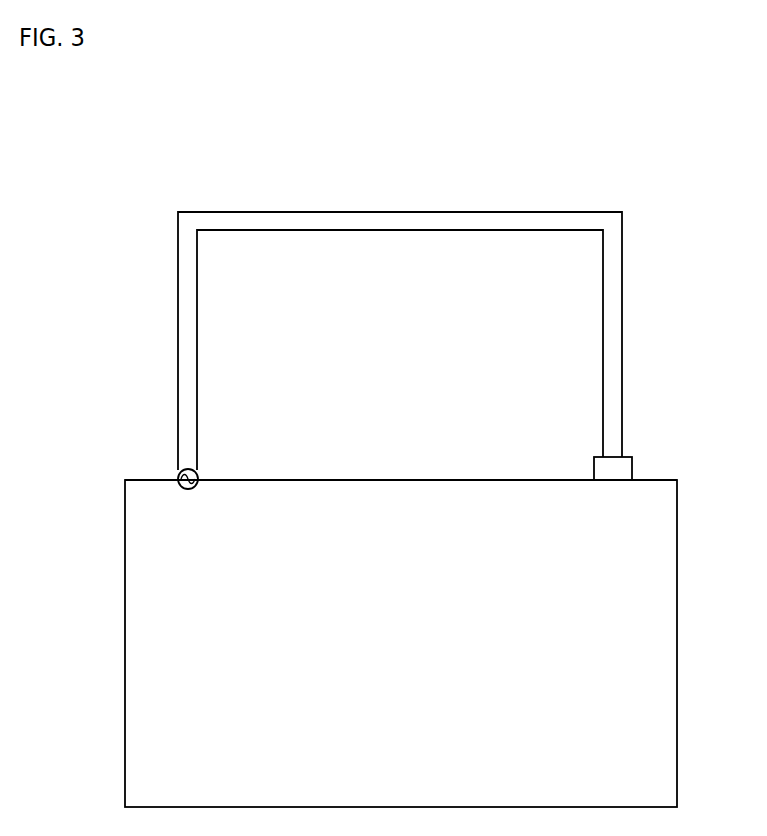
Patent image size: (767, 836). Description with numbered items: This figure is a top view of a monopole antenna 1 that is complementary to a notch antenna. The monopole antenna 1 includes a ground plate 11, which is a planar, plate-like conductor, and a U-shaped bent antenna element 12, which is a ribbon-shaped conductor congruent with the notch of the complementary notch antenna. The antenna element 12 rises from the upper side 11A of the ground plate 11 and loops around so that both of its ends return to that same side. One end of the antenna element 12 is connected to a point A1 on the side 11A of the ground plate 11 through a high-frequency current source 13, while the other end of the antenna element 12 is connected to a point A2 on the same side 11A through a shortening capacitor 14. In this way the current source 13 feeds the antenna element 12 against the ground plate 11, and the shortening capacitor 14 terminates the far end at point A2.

The monopole antenna 1 is at (718, 244).
The ground plate 11 is at (670, 643).
The side of the ground plate 11A is at (402, 478).
The antenna element 12 is at (496, 216).
The high-frequency current source 13 is at (180, 487).
The shortening capacitor 14 is at (628, 478).
The point A1' A1 is at (188, 508).
The point A2' A2 is at (611, 508).